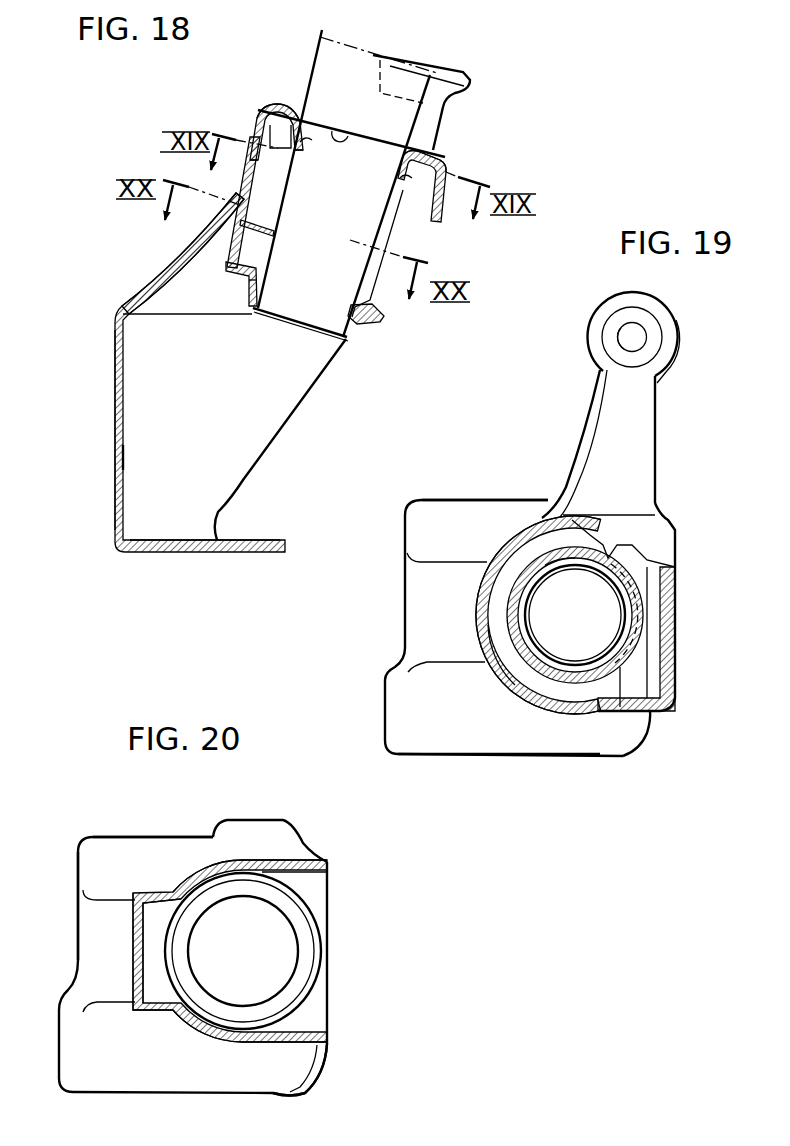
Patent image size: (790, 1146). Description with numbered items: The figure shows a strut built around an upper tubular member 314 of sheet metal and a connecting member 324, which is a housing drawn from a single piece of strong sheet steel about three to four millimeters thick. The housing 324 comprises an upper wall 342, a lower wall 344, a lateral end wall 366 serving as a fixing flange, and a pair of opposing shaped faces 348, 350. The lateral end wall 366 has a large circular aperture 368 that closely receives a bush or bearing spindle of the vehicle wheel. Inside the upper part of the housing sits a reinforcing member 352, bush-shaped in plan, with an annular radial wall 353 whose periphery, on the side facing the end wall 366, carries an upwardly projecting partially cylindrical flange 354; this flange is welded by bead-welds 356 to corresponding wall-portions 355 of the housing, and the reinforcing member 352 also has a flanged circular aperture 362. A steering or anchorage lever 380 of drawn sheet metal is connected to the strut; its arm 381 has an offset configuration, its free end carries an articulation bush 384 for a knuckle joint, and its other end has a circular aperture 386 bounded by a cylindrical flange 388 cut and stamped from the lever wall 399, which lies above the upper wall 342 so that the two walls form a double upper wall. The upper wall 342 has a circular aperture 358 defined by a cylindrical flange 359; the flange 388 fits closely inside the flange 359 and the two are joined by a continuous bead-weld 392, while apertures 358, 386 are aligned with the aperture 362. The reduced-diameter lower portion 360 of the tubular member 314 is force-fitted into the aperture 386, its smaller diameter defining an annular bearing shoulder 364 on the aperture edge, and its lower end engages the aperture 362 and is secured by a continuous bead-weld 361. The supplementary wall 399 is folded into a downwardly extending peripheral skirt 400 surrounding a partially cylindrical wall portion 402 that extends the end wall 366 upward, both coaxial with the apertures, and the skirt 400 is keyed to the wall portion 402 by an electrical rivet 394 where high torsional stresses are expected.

In FIG. 18, the upper tubular member 314 is at (318, 51).
In FIG. 18, the connecting member 324 is at (148, 247).
In FIG. 19, the connecting member 324 is at (540, 760).
In FIG. 20, the connecting member 324 is at (142, 833).
In FIG. 18, the upper wall 342 is at (272, 110).
In FIG. 19, the upper wall 342 is at (592, 683).
In FIG. 18, the lower wall 344 is at (162, 553).
In FIG. 19, the shaped face 348 is at (500, 757).
In FIG. 20, the shaped face 348 is at (270, 1093).
In FIG. 18, the shaped face 350 is at (258, 400).
In FIG. 19, the shaped face 350 is at (487, 505).
In FIG. 20, the shaped face 350 is at (175, 837).
In FIG. 18, the reinforcing member 352 is at (233, 286).
In FIG. 19, the reinforcing member 352 is at (575, 615).
In FIG. 20, the reinforcing member 352 is at (315, 890).
In FIG. 18, the annular radial wall 353 is at (252, 268).
In FIG. 20, the annular radial wall 353 is at (310, 973).
In FIG. 18, the partially cylindrical flange 354 is at (230, 247).
In FIG. 20, the partially cylindrical flange 354 is at (167, 953).
In FIG. 18, the wall-portions 355 is at (238, 307).
In FIG. 20, the wall-portions 355 is at (193, 883).
In FIG. 18, the bead-welds 356 is at (265, 228).
In FIG. 20, the bead-welds 356 is at (243, 863).
In FIG. 18, the circular aperture 358 is at (300, 142).
In FIG. 19, the circular aperture 358 is at (568, 578).
In FIG. 18, the cylindrical flange 359 is at (440, 207).
In FIG. 19, the cylindrical flange 359 is at (562, 567).
In FIG. 18, the lower portion 360 is at (413, 203).
In FIG. 18, the continuous bead-weld 361 is at (350, 338).
In FIG. 18, the flanged circular aperture 362 is at (258, 288).
In FIG. 20, the flanged circular aperture 362 is at (290, 987).
In FIG. 18, the annular bearing shoulder 364 is at (353, 131).
In FIG. 18, the lateral end wall 366 is at (117, 345).
In FIG. 19, the lateral end wall 366 is at (390, 607).
In FIG. 20, the lateral end wall 366 is at (77, 872).
In FIG. 18, the circular aperture 368 is at (120, 465).
In FIG. 18, the steering lever 380 is at (455, 140).
In FIG. 19, the steering lever 380 is at (657, 450).
In FIG. 19, the arm 381 is at (640, 417).
In FIG. 19, the articulation bush 384 is at (650, 328).
In FIG. 18, the circular aperture 386 is at (334, 146).
In FIG. 19, the circular aperture 386 is at (613, 594).
In FIG. 18, the cylindrical flange 388 is at (400, 178).
In FIG. 19, the cylindrical flange 388 is at (557, 655).
In FIG. 18, the continuous bead-weld 392 is at (410, 187).
In FIG. 18, the electrical rivet 394 is at (252, 145).
In FIG. 19, the electrical rivet 394 is at (510, 545).
In FIG. 18, the supplementary wall 399 is at (293, 110).
In FIG. 19, the supplementary wall 399 is at (667, 527).
In FIG. 18, the peripheral skirt 400 is at (258, 128).
In FIG. 19, the peripheral skirt 400 is at (490, 657).
In FIG. 18, the wall portion 402 is at (283, 152).
In FIG. 19, the wall portion 402 is at (570, 703).